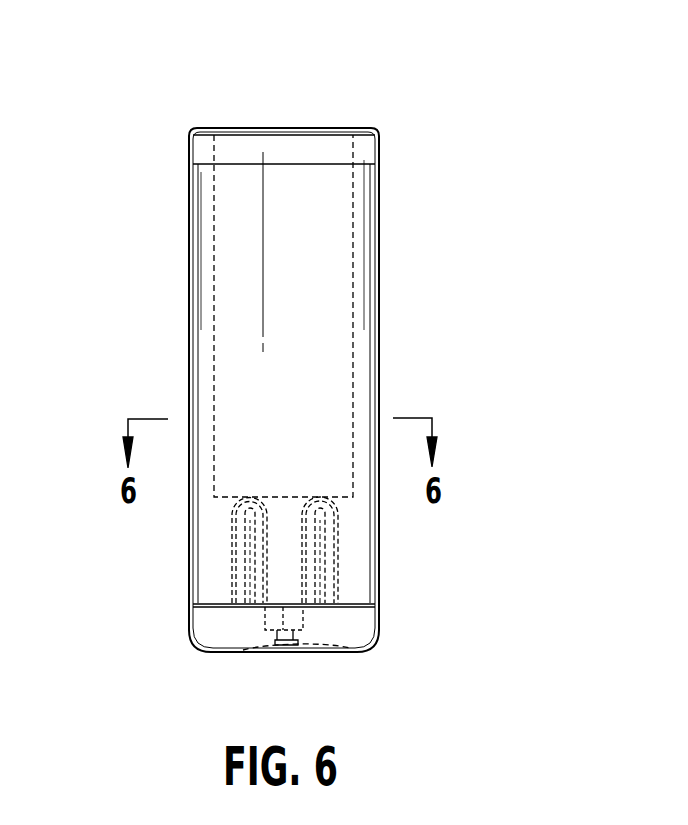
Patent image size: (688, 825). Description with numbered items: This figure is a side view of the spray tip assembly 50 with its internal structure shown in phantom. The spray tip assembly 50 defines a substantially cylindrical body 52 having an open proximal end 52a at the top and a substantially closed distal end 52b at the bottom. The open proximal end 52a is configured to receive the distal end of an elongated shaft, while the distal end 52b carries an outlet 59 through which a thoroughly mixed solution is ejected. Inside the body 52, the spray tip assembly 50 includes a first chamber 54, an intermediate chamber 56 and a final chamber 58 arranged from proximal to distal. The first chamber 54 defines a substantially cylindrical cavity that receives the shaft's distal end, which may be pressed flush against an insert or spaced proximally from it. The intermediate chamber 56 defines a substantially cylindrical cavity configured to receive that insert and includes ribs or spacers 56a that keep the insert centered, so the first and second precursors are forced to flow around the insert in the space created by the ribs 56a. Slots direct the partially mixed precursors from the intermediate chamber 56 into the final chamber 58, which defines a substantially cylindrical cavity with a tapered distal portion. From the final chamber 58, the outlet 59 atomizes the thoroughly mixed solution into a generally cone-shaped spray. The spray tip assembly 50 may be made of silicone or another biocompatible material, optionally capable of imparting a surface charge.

The spray tip assembly 50 is at (410, 187).
The cylindrical body 52 is at (188, 300).
The open proximal end 52a is at (378, 147).
The closed distal end 52b is at (195, 630).
The first chamber 54 is at (353, 302).
The intermediate chamber 56 is at (250, 520).
The ribs 56a is at (232, 552).
The final chamber 58 is at (323, 612).
The outlet 59 is at (273, 665).